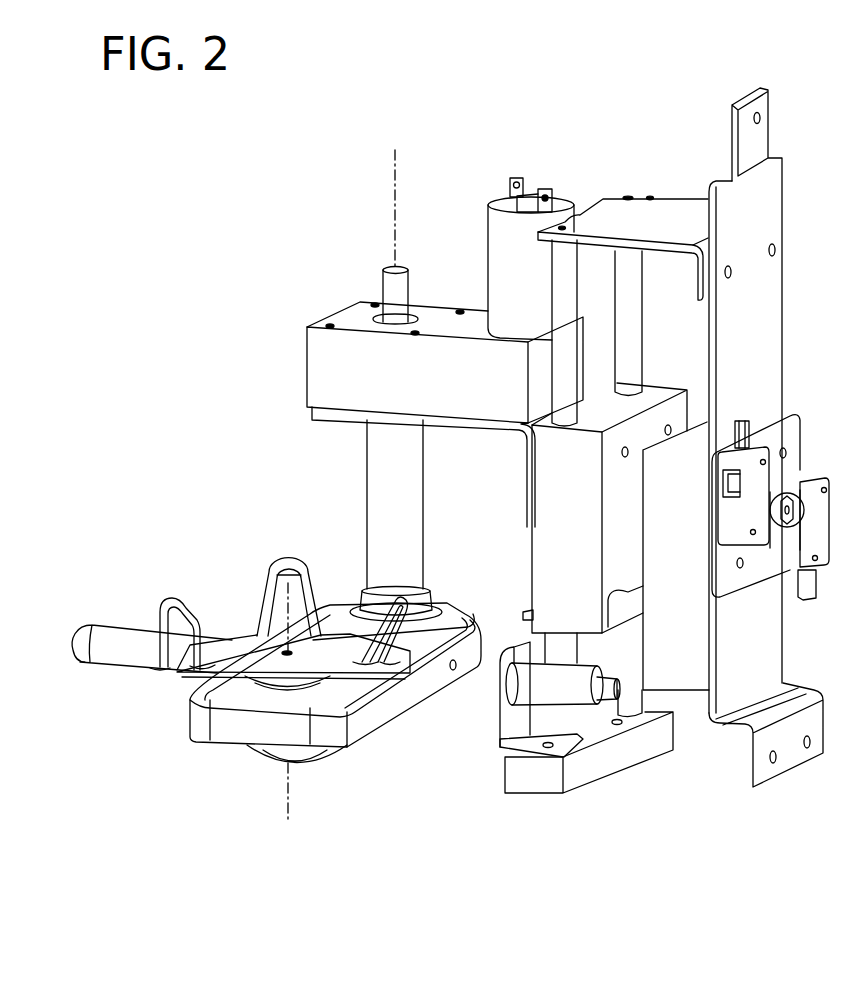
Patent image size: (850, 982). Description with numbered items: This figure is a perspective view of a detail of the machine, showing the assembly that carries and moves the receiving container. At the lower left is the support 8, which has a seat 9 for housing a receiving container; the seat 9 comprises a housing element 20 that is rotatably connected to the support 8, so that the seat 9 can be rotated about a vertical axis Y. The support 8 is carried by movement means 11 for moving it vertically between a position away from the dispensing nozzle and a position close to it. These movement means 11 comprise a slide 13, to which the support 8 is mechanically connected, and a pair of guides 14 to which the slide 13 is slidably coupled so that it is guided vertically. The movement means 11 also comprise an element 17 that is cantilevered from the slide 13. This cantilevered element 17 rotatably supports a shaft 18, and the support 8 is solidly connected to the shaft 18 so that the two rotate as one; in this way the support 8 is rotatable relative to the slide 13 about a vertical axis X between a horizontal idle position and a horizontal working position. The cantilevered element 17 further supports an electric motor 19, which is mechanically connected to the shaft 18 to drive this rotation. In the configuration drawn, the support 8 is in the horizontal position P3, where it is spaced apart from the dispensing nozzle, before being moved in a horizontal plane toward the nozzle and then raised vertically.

The support 8 is at (250, 594).
The seat 9 is at (334, 590).
The housing element 20 is at (323, 542).
The movement means 11 is at (562, 268).
The slide 13 is at (565, 553).
The guide 14 is at (632, 285).
The cantilevered element 17 is at (330, 303).
The shaft 18 is at (355, 489).
The motor 19 is at (534, 180).
The vertical axis X is at (392, 181).
The vertical axis Y is at (288, 798).
The horizontal position P3 is at (397, 748).